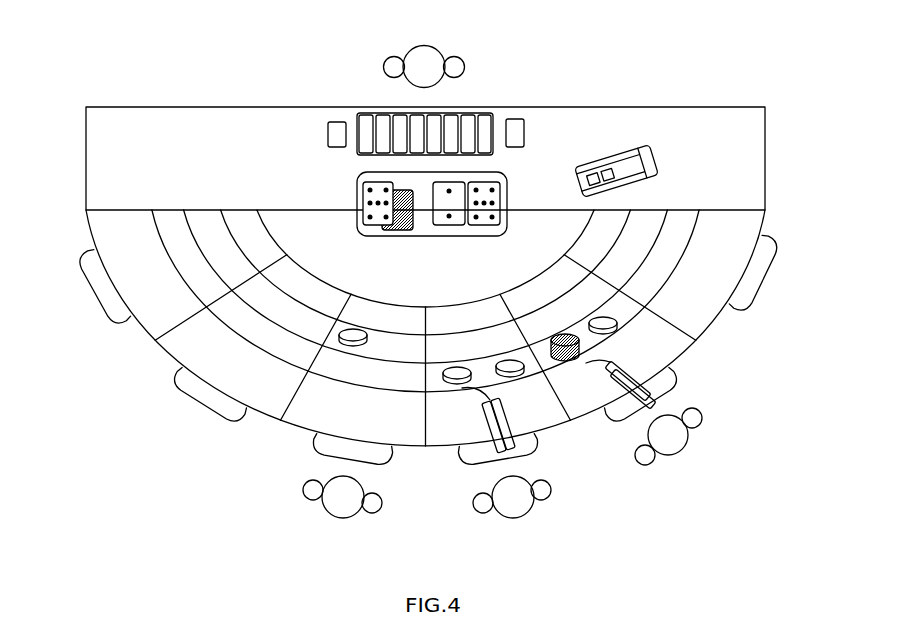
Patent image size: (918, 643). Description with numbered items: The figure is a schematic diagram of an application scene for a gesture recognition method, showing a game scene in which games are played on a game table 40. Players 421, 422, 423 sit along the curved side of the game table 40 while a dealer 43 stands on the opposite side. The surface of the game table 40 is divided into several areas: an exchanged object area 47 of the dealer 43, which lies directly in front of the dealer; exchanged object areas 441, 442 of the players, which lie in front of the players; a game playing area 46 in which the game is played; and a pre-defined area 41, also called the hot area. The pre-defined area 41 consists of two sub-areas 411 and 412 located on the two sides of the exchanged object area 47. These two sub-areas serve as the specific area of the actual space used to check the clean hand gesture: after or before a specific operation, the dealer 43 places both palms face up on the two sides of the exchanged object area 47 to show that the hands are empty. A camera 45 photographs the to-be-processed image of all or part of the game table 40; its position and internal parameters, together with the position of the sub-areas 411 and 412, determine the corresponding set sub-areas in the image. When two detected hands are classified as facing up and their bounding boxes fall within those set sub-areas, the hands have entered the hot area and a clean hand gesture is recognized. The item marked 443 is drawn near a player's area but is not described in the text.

The game table 40 is at (768, 152).
The pre-defined area 41 is at (240, 44).
The sub-area 411 is at (514, 119).
The sub-area 412 is at (334, 121).
The dealer 43 is at (442, 43).
The camera 45 is at (634, 148).
The game playing area 46 is at (356, 192).
The exchanged object area of the dealer 47 is at (366, 128).
The player 421 is at (313, 502).
The player 422 is at (540, 502).
The player 423 is at (644, 466).
The exchanged object area of the players 441 is at (452, 384).
The exchanged object area of the players 442 is at (614, 333).
The chip stack 443 is at (561, 366).